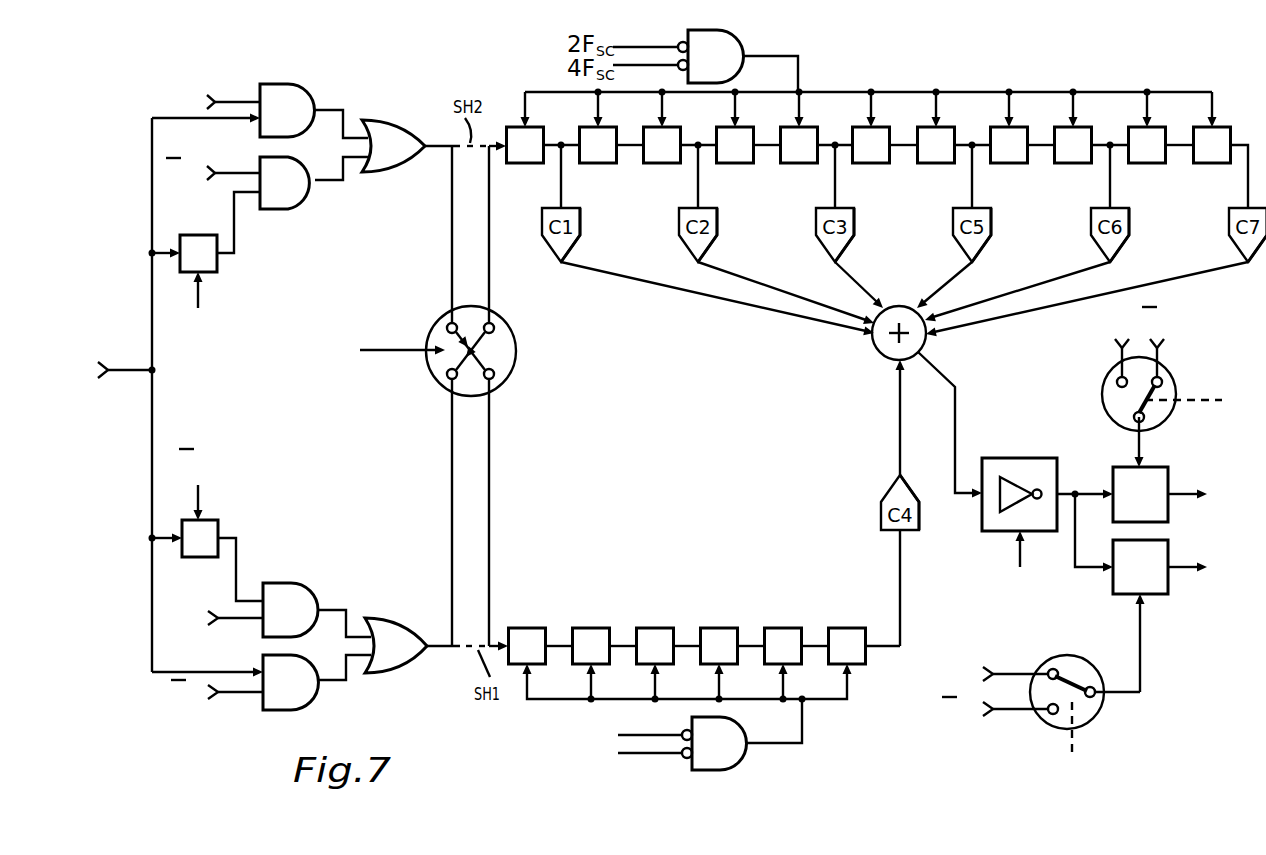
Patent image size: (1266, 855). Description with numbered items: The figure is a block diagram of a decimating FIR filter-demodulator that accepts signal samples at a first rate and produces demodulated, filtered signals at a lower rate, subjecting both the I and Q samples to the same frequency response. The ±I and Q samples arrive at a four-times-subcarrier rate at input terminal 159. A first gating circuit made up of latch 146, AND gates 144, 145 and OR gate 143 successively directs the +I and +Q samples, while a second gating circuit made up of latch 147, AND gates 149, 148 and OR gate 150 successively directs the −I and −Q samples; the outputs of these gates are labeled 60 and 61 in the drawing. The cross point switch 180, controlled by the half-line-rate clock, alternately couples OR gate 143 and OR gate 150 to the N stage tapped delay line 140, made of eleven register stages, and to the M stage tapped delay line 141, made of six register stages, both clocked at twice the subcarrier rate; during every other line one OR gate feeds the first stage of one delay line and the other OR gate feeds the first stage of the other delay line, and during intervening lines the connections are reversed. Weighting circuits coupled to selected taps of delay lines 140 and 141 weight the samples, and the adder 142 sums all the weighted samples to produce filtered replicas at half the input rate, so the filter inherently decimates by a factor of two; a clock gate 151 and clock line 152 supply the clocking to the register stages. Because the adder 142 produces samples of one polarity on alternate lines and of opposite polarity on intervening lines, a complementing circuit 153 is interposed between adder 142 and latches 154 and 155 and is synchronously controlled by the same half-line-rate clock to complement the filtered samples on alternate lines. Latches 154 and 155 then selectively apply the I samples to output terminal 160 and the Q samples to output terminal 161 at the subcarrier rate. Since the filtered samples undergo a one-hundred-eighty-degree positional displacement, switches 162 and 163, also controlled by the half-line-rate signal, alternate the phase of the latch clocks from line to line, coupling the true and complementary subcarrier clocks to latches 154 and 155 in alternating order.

The OR gate output (+I/+Q sum) 60 is at (336, 157).
The OR gate output (-Q/-I sum) 61 is at (349, 659).
The N stage tapped delay line 140 is at (922, 122).
The M stage tapped delay line 141 is at (698, 609).
The adder 142 is at (882, 352).
The OR gate 143 is at (410, 160).
The AND gate 144 is at (303, 124).
The AND gate 145 is at (303, 196).
The latch 146 is at (217, 270).
The latch 147 is at (218, 520).
The AND gate 148 is at (306, 623).
The AND gate 149 is at (306, 696).
The OR gate 150 is at (412, 660).
The AND gate (clock) 151 is at (687, 734).
The adder 152 is at (825, 700).
The complementing circuit 153 is at (1020, 458).
The latch 154 is at (1168, 478).
The latch 155 is at (1169, 594).
The input terminal 159 is at (132, 368).
The output terminal 160 is at (1195, 494).
The output terminal 161 is at (1192, 567).
The switch 162 is at (1170, 370).
The switch 163 is at (1097, 718).
The cross point switch 180 is at (506, 319).